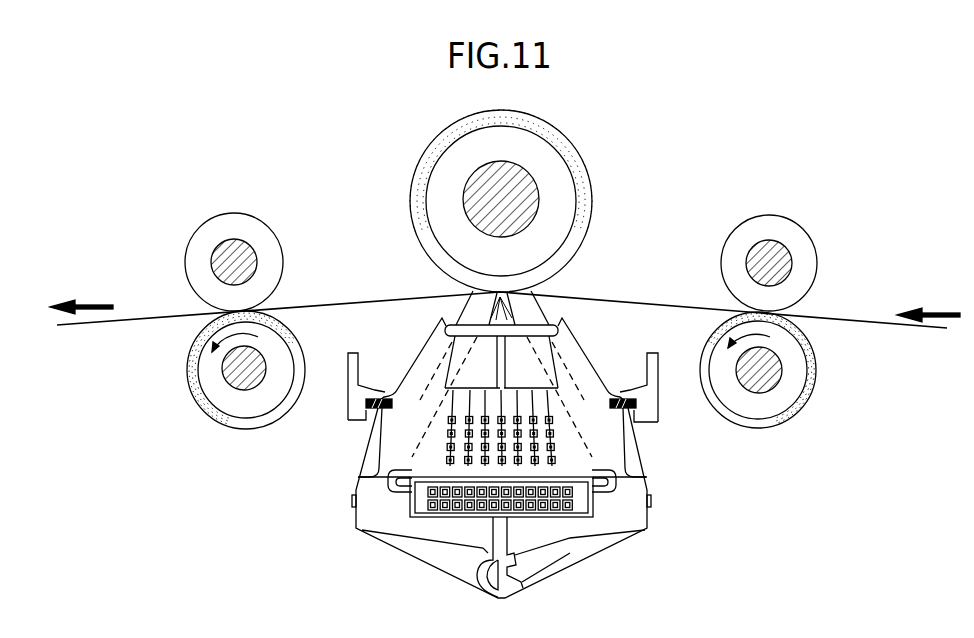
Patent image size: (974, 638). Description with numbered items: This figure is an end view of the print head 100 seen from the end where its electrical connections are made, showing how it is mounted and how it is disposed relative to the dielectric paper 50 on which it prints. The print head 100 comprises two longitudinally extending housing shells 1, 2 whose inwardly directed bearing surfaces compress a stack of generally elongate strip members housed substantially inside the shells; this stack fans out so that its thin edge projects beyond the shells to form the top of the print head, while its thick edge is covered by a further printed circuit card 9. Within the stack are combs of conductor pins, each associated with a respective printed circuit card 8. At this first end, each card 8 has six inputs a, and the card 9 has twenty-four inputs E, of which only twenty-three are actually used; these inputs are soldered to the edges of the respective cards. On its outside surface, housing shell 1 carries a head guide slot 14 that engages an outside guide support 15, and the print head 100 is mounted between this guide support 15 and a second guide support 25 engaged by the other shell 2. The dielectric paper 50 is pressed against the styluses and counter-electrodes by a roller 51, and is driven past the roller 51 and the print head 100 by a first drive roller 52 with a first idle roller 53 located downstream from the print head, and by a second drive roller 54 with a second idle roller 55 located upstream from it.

The housing shell 1 is at (428, 340).
The housing shell 2 is at (597, 370).
The printed circuit card 8 is at (447, 455).
The printed circuit card 9 is at (603, 457).
The input a is at (455, 430).
The head guide slot 14 is at (398, 397).
The guide support 15 is at (348, 418).
The guide support 25 is at (648, 408).
The dielectric paper 50 is at (152, 315).
The roller 51 is at (590, 199).
The first drive roller 52 is at (213, 382).
The first idle roller 53 is at (267, 240).
The second drive roller 54 is at (818, 370).
The second idle roller 55 is at (812, 257).
The print head 100 is at (593, 346).
The input E is at (452, 507).